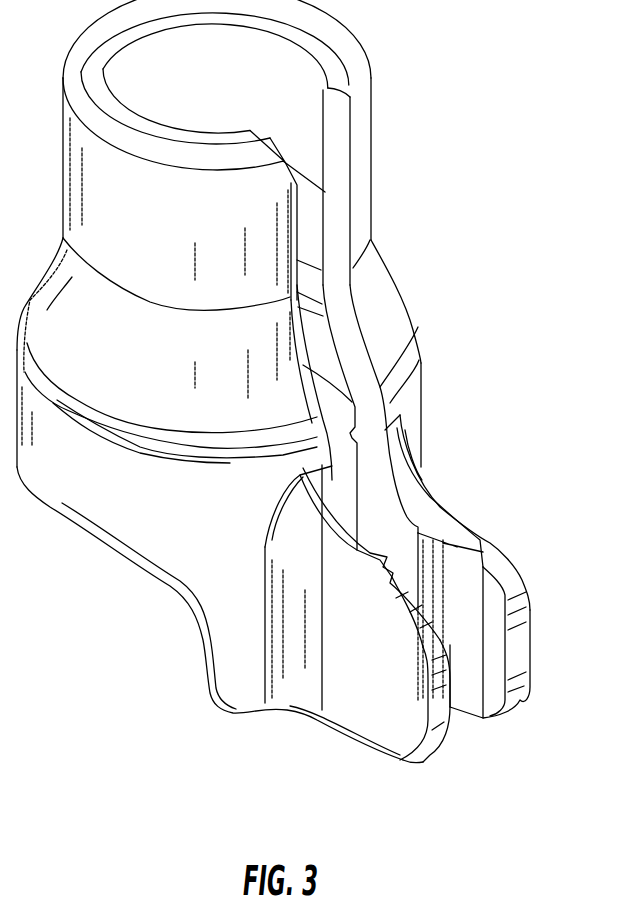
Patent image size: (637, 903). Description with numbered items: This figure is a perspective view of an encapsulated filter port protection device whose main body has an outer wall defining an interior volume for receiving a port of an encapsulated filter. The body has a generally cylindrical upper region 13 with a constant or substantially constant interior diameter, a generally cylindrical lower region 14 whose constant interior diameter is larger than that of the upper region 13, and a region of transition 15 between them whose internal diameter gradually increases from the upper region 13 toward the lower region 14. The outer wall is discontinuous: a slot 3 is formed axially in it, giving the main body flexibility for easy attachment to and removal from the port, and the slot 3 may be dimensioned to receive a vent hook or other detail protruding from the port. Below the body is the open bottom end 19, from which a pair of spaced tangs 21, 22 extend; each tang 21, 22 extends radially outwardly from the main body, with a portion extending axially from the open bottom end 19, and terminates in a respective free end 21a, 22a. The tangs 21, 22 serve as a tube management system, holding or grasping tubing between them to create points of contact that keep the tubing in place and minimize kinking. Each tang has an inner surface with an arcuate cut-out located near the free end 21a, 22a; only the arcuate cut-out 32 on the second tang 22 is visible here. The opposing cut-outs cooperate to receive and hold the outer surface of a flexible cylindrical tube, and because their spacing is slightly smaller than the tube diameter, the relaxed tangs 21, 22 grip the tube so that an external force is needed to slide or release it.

The upper region 13 is at (372, 150).
The slot 3 is at (318, 236).
The region of transition 15 is at (392, 288).
The lower region 14 is at (420, 398).
The open bottom end 19 is at (187, 603).
The tang 21 is at (368, 690).
The free end 21a is at (437, 707).
The tang 22 is at (503, 548).
The free end 22a is at (517, 663).
The arcuate cut-out 32 is at (468, 600).